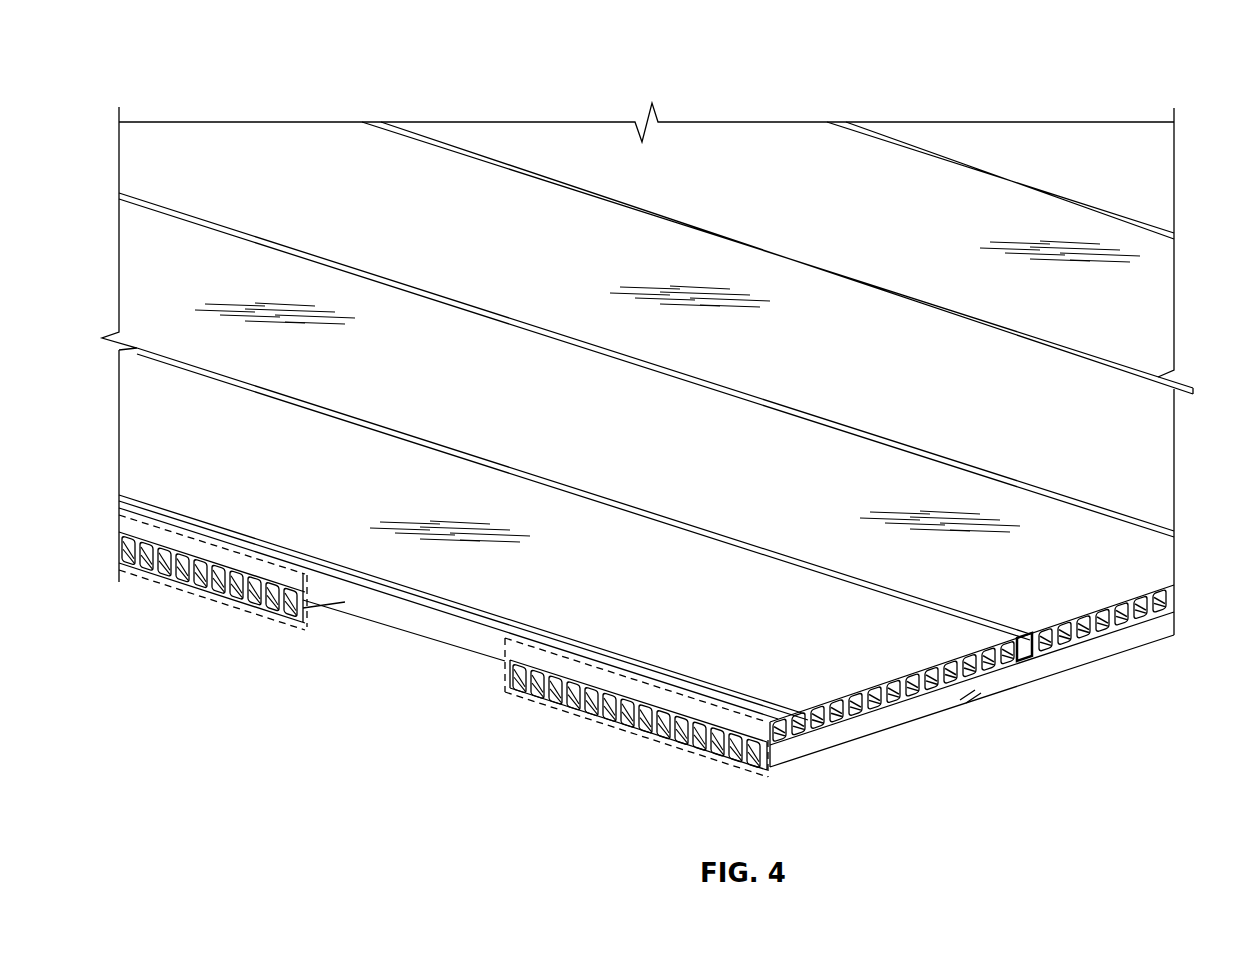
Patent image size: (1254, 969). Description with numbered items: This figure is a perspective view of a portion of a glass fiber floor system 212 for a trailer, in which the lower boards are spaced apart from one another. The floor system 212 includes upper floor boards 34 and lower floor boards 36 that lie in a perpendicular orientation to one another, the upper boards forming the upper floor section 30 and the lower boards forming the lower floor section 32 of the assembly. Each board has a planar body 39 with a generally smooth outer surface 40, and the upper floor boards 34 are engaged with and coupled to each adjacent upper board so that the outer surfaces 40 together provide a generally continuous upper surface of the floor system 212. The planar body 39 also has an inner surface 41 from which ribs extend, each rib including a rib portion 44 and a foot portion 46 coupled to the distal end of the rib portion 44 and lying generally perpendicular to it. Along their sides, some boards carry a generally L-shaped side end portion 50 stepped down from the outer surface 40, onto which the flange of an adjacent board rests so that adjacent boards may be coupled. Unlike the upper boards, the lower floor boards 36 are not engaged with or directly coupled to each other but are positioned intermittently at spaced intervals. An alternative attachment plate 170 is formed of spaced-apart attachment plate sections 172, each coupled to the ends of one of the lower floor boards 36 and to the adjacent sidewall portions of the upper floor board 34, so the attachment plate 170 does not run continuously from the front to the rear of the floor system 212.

The floor system 212 is at (303, 48).
The panel 30 is at (1157, 285).
The upper floor board 34 is at (1166, 332).
The outer surface 40 is at (922, 245).
The rib portion 44 is at (1123, 630).
The attachment plate section 172 is at (297, 622).
The attachment plate 170 is at (228, 617).
The planar body 39 is at (172, 578).
The L-shaped side end portion 50 is at (1035, 645).
The lower floor board 36 is at (326, 620).
The bottom surface 32 is at (448, 630).
The inner surface 41 is at (737, 750).
The foot portion 46 is at (927, 700).